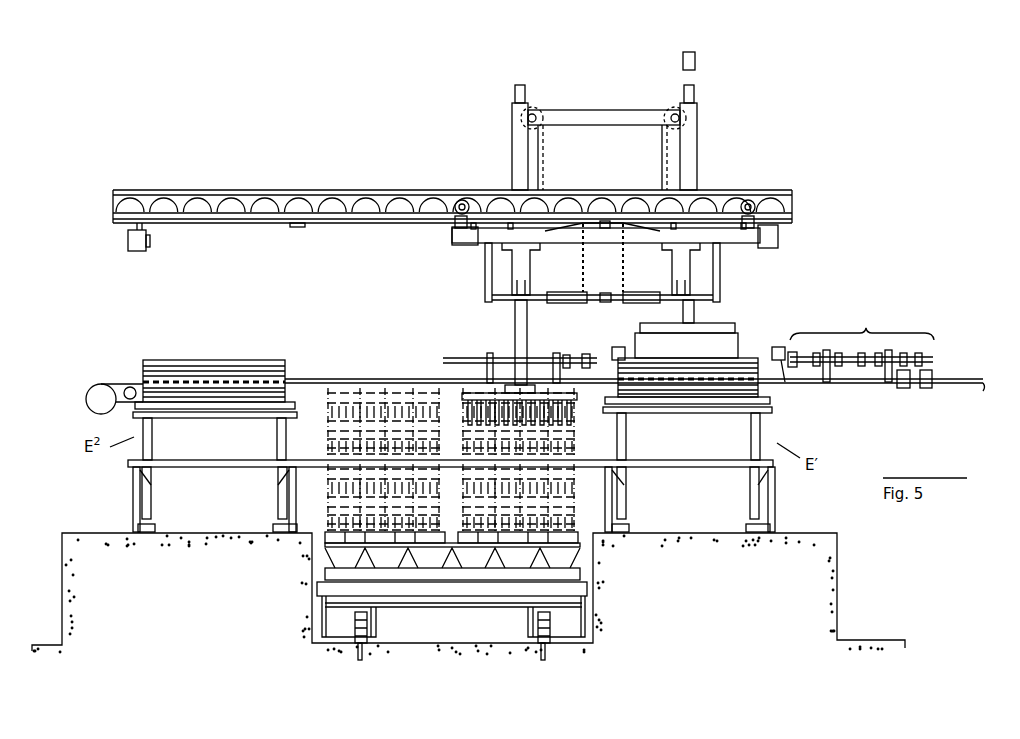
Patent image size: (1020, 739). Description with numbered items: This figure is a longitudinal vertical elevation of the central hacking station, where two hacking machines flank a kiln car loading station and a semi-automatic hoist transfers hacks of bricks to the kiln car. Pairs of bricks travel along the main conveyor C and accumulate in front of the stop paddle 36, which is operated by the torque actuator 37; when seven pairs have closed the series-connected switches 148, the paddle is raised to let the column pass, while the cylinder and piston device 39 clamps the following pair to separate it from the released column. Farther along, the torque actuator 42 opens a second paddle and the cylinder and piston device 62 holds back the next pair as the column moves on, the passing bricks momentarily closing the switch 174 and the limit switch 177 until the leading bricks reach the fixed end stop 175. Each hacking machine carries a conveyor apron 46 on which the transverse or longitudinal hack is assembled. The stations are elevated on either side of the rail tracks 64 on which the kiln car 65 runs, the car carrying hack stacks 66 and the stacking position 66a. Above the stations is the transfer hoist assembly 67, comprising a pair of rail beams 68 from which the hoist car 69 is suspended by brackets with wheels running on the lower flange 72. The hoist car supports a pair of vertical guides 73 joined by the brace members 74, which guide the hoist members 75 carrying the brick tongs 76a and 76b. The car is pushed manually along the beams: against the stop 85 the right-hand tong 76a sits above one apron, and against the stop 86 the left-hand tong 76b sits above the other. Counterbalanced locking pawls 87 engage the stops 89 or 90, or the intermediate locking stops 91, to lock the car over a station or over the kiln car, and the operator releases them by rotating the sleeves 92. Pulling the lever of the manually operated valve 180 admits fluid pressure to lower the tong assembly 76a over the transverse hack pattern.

The stop paddle 36 is at (785, 385).
The torque actuator 37 is at (783, 345).
The cylinder and piston device 39 is at (900, 390).
The torque actuator 42 is at (614, 350).
The conveyor apron 46 is at (188, 368).
The cylinder and piston device 62 is at (926, 390).
The rail tracks 64 is at (367, 655).
The kiln car 65 is at (456, 605).
The hack stack 66 is at (578, 442).
The stacking position 66a is at (328, 443).
The transfer hoist assembly 67 is at (739, 179).
The rail beams 68 is at (233, 193).
The hoist car 69 is at (460, 246).
The lower flange 72 is at (241, 216).
The vertical guides 73 is at (512, 146).
The brace members 74 is at (592, 110).
The hoist members 75 is at (515, 93).
The brick tong 76a is at (740, 336).
The brick tong 76b is at (462, 380).
The stop 85 is at (766, 248).
The stop 86 is at (150, 241).
The locking pawls 87 is at (621, 230).
The stop 89 is at (606, 212).
The stop 90 is at (298, 228).
The intermediate locking stops 91 is at (458, 230).
The sleeves 92 is at (568, 303).
The switches 148 is at (861, 344).
The switch 174 is at (553, 355).
The fixed end stop 175 is at (140, 370).
The limit switch 177 is at (584, 354).
The manually operated valve 180 is at (485, 286).
The main conveyor C is at (321, 378).